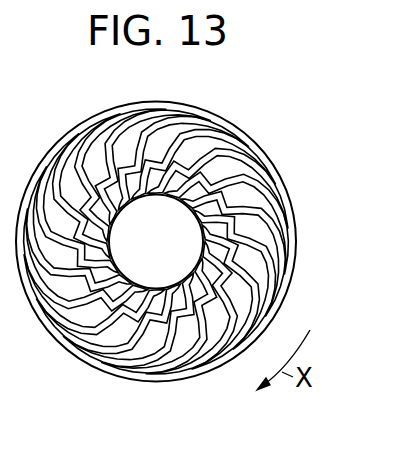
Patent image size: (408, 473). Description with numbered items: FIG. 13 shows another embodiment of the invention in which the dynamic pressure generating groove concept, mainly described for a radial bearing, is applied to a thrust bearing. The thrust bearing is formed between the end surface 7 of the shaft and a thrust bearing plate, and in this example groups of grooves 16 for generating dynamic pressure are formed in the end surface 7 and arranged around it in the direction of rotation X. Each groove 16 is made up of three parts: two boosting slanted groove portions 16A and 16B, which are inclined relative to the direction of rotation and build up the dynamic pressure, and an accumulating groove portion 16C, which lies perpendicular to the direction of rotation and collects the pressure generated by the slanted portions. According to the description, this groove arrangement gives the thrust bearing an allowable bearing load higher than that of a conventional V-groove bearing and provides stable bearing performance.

The end surface 7 is at (288, 212).
The grooves 16 is at (260, 177).
The boosting slanted groove portion 16A is at (121, 284).
The boosting slanted groove portion 16B is at (129, 361).
The accumulating groove portion 16C is at (171, 338).